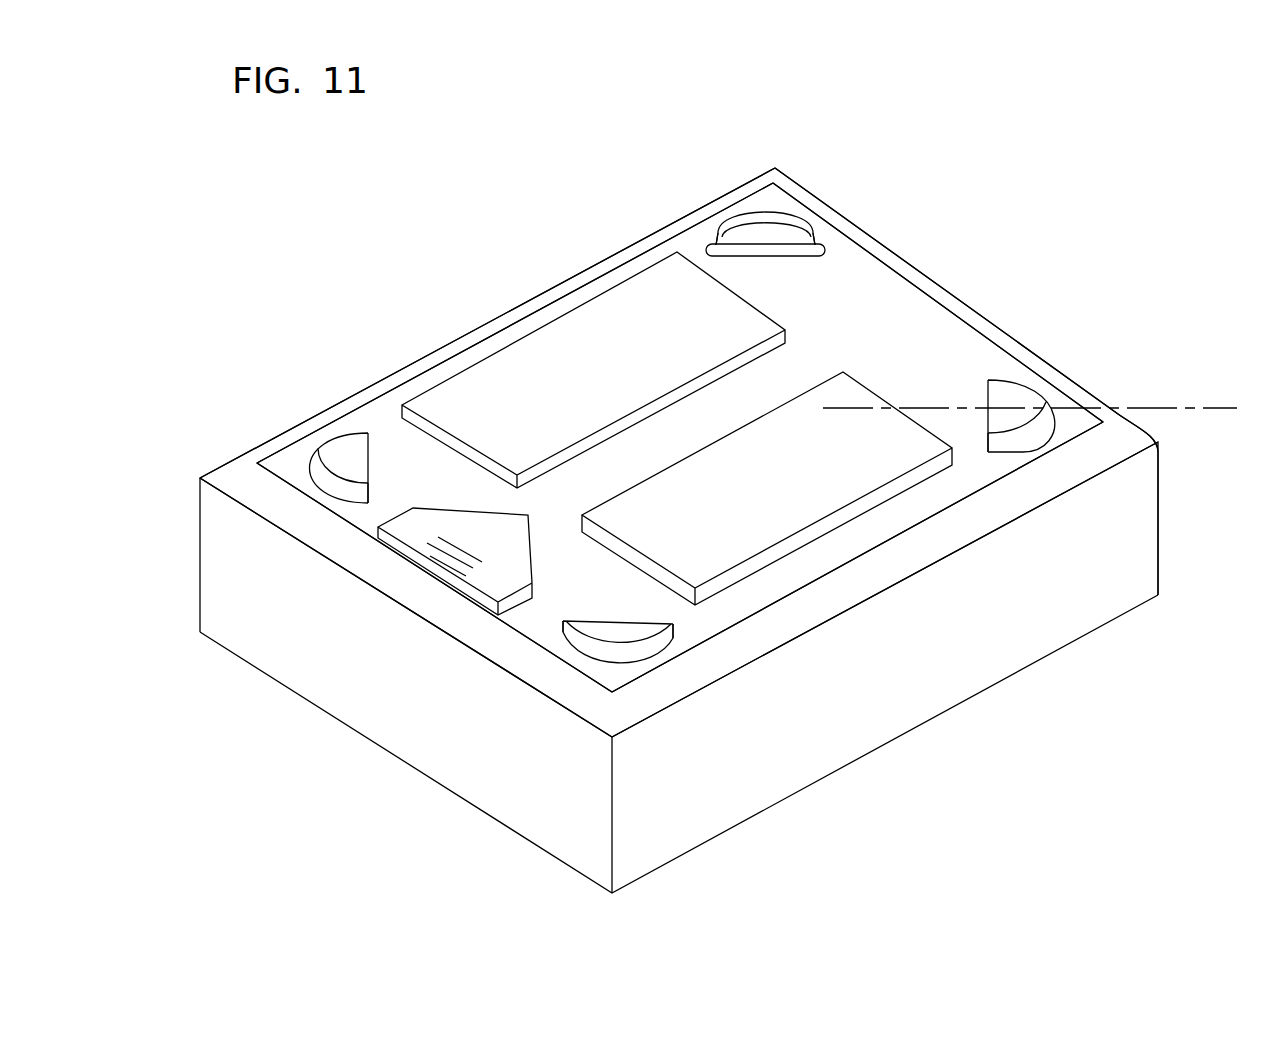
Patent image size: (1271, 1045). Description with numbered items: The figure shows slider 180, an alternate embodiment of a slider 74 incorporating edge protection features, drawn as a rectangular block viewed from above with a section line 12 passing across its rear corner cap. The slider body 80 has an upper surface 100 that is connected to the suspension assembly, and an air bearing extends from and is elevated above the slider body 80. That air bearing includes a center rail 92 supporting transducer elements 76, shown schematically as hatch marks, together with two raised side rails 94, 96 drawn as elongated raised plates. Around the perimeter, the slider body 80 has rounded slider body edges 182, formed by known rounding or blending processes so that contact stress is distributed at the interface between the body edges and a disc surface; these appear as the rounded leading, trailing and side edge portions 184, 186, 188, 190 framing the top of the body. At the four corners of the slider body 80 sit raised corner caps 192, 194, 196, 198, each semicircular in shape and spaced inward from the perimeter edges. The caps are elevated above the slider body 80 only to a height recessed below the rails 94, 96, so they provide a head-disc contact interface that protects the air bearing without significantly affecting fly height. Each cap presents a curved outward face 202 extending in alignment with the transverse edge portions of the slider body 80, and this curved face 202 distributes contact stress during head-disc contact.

The slider 74 is at (565, 267).
The slider body 80 is at (908, 297).
The slider 180 is at (898, 205).
The upper surface 100 is at (942, 715).
The rounded side edge portion 188 is at (397, 371).
The rounded leading edge portion 184 is at (1007, 398).
The rounded side edge portion 190 is at (830, 618).
The rounded trailing edge portion 186 is at (507, 655).
The rounded slider body edges 182 is at (985, 512).
The raised side rail 94 is at (607, 402).
The raised side rail 96 is at (757, 528).
The center rail 92 is at (523, 543).
The transducer elements 76 is at (443, 557).
The raised corner cap 196 is at (350, 452).
The raised corner cap 198 is at (757, 230).
The raised corner cap 192 is at (1012, 402).
The raised corner cap 194 is at (620, 633).
The curved outward face 202 is at (817, 240).
The section line 12- 12 is at (860, 405).